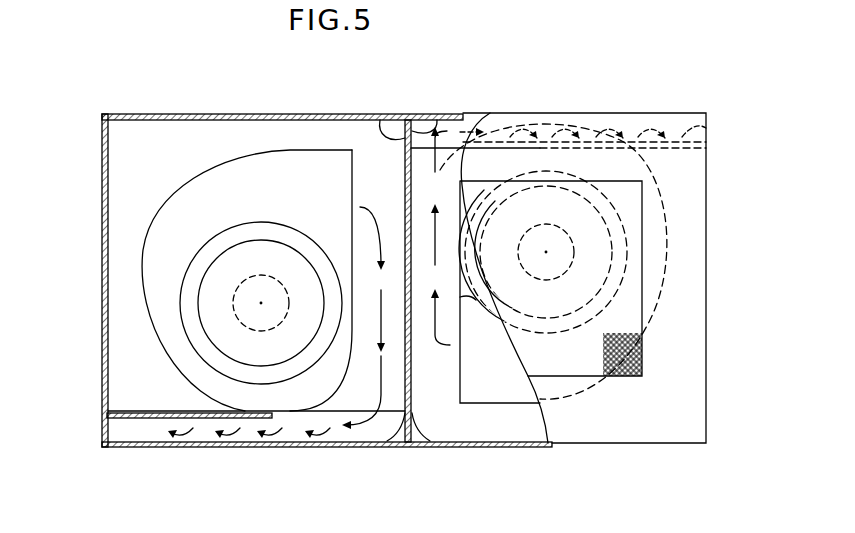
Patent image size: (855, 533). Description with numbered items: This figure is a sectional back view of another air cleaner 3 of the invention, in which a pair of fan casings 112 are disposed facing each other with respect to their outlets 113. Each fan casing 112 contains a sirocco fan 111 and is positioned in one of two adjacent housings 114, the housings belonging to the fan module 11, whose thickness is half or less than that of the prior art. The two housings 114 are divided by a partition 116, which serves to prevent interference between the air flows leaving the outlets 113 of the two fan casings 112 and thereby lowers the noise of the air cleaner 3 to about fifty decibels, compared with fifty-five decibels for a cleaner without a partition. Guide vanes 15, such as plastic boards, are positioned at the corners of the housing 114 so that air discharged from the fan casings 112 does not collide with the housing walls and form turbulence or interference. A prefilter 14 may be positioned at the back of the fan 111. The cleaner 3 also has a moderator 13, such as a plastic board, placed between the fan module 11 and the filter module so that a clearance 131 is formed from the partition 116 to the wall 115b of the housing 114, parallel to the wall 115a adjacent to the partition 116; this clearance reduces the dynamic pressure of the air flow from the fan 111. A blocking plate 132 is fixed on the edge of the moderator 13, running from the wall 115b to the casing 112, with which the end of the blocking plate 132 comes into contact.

The air cleaner 3 is at (655, 112).
The fan module 11 is at (142, 114).
The moderator 13 is at (190, 128).
The prefilter 14 is at (643, 352).
The guide vane 15 is at (430, 114).
The sirocco fan 111 is at (248, 222).
The fan casing 112 is at (292, 150).
The outlet 113 is at (352, 170).
The housing 114 is at (102, 245).
The wall of the housing 115a is at (490, 113).
The wall of the housing 115b is at (107, 428).
The partition 116 is at (418, 443).
The clearance 131 is at (683, 125).
The blocking plate 132 is at (700, 142).